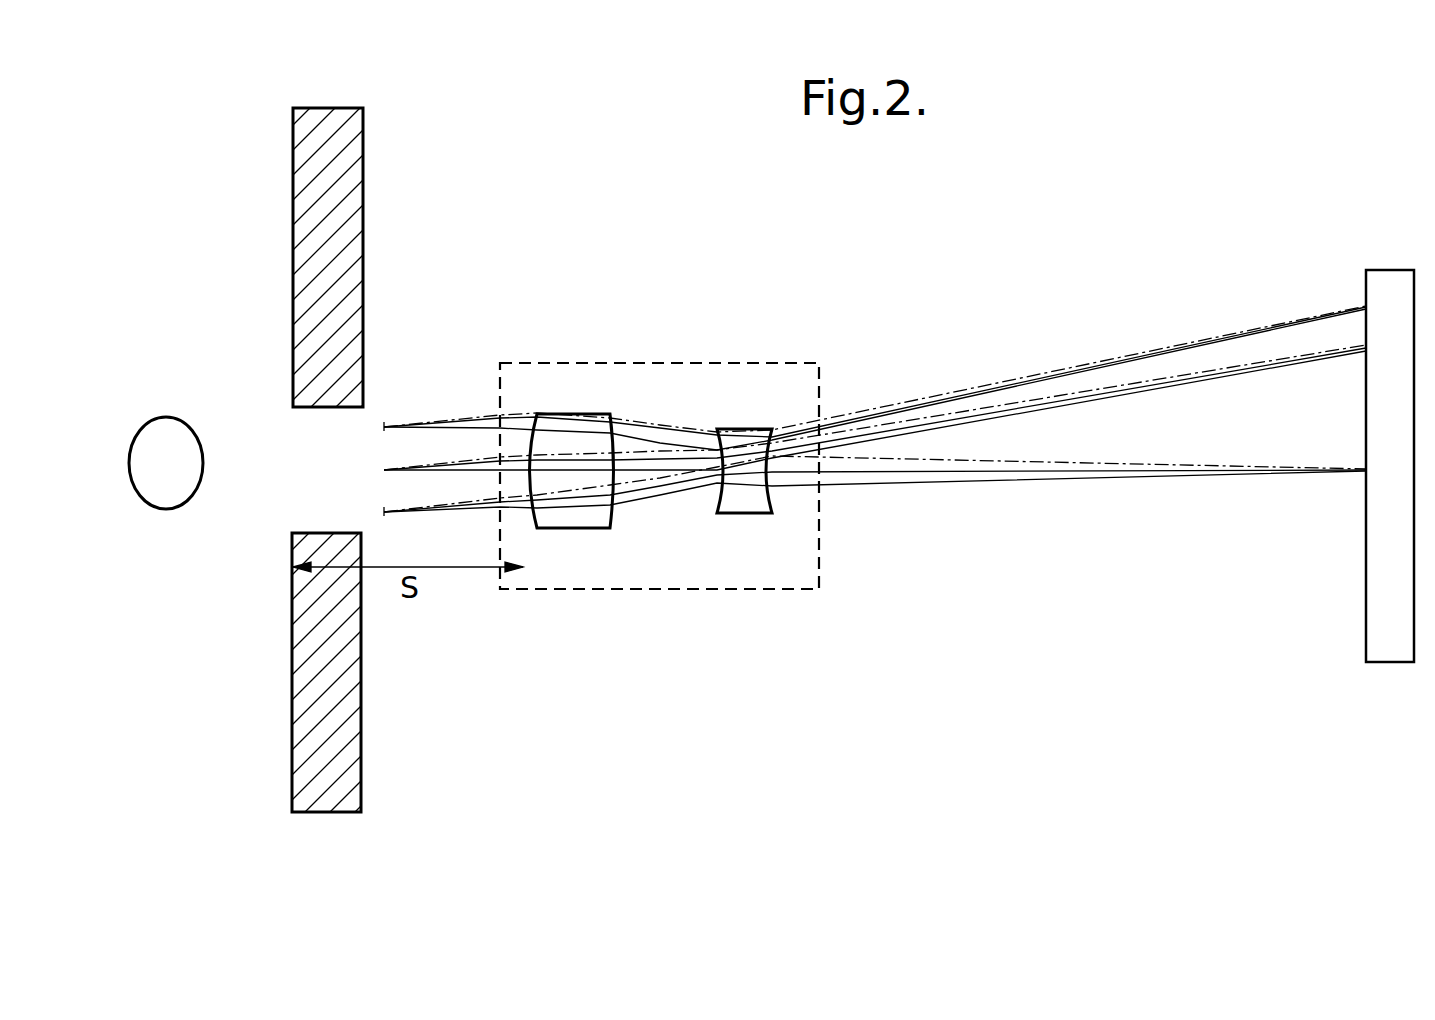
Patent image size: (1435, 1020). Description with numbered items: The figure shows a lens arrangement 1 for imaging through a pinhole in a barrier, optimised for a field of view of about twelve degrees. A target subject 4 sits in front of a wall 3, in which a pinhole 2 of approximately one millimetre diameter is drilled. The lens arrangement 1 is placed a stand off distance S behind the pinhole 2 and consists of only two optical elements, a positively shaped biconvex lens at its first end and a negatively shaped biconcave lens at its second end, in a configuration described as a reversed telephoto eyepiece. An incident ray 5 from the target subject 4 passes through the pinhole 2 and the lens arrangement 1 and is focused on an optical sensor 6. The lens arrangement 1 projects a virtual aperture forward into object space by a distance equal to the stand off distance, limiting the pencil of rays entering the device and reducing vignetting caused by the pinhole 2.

The lens arrangement 1 is at (665, 362).
The pinhole 2 is at (338, 494).
The wall 3 is at (293, 172).
The target subject 4 is at (141, 428).
The incident ray 5 is at (1166, 478).
The optical sensor 6 is at (1391, 270).